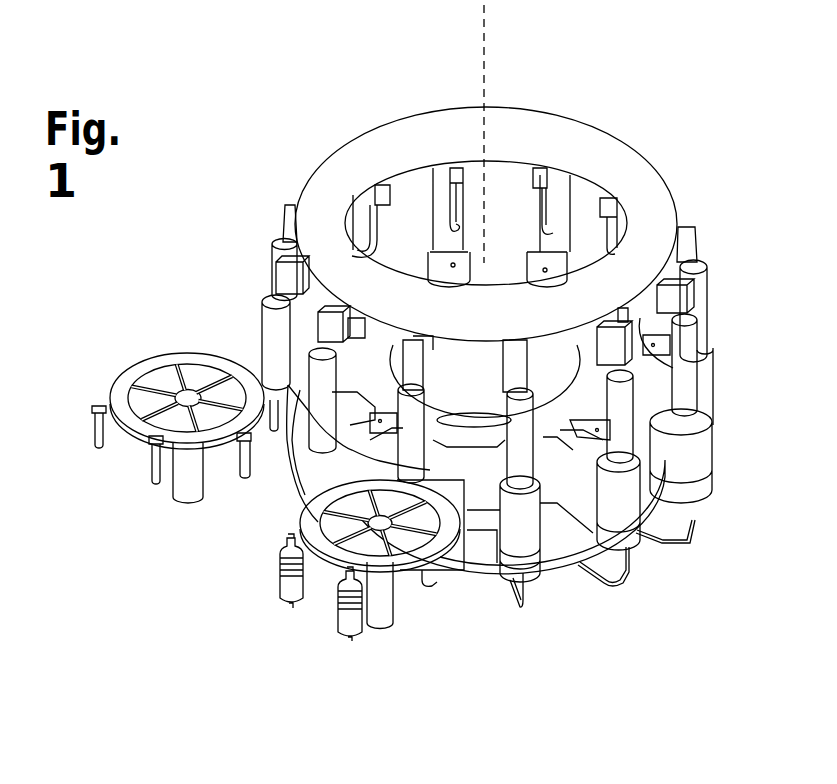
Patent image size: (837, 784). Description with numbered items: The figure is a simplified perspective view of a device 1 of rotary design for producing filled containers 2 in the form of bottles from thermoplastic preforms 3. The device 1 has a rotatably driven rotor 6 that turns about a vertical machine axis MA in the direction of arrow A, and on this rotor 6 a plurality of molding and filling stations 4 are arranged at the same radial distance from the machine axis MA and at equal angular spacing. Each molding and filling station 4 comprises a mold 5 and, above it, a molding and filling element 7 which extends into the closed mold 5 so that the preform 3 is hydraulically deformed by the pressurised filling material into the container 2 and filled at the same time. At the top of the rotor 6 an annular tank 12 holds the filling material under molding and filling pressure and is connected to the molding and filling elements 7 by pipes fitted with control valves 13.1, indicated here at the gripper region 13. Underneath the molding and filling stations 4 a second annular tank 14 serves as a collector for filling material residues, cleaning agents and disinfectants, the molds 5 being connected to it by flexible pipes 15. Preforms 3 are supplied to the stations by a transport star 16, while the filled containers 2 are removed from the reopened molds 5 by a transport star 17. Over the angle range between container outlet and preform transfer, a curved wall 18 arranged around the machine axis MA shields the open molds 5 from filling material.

The device 1 is at (684, 124).
The filled container 2 is at (290, 577).
The preform 3 is at (153, 472).
The molding and filling station 4 is at (714, 452).
The mold 5 is at (684, 460).
The rotor 6 is at (561, 503).
The molding and filling element 7 is at (688, 386).
The annular tank 12 is at (325, 178).
The gripper 13 is at (457, 210).
The control valve 13.1 is at (452, 176).
The annular tank 14 is at (465, 573).
The flexible pipe 15 is at (600, 578).
The transport star 16 is at (183, 362).
The transport star 17 is at (414, 555).
The wall 18 is at (298, 456).
The machine axis MA is at (512, 134).
The arrow A is at (748, 496).